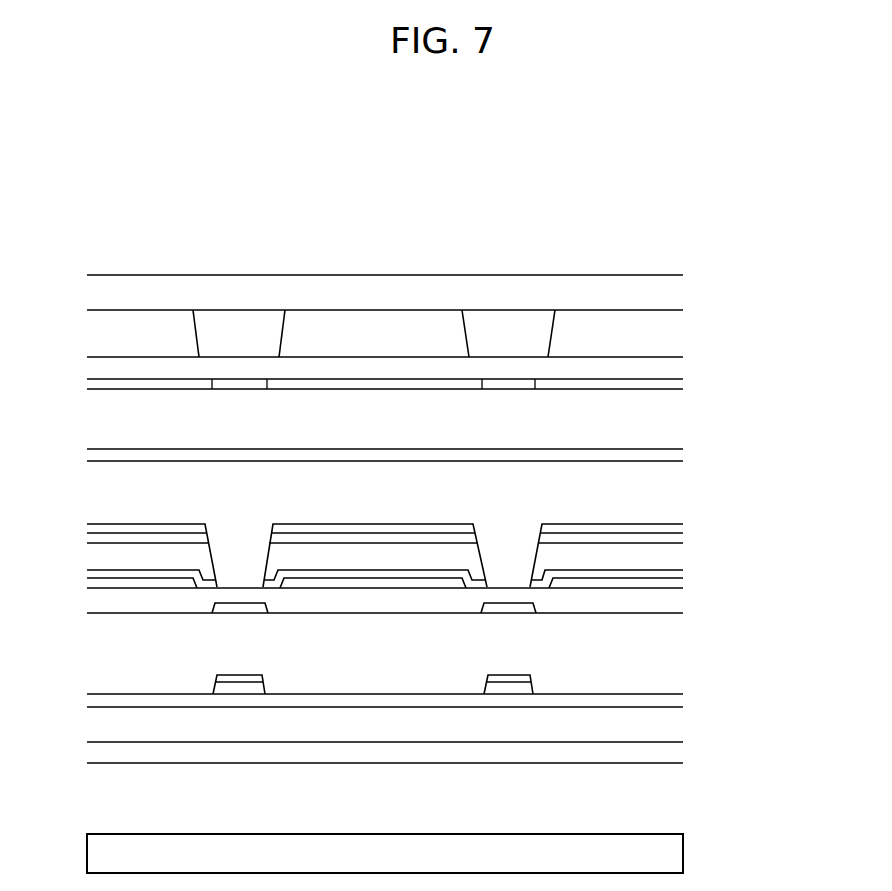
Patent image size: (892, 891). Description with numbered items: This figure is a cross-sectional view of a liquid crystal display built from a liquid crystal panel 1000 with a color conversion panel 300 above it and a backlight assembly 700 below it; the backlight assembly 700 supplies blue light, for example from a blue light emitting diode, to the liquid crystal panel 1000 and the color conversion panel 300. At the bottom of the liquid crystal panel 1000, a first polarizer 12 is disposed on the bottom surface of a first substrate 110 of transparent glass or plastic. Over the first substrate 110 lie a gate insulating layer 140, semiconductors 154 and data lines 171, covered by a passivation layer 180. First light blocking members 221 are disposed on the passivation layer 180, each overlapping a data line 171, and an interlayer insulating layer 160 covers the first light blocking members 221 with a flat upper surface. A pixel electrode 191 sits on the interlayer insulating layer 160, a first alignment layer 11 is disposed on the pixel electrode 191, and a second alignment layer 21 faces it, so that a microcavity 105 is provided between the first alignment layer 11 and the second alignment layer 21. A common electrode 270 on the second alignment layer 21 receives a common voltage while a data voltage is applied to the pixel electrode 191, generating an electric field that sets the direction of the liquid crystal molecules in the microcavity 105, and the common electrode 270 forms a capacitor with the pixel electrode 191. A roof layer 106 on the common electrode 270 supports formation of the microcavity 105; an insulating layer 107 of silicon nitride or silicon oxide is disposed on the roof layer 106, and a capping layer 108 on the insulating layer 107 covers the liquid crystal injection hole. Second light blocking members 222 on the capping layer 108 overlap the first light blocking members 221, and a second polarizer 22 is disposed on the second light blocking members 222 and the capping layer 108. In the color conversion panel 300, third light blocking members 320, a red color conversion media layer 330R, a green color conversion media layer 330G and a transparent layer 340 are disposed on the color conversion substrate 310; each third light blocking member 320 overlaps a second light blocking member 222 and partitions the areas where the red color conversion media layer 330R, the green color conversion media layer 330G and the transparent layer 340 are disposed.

The color conversion panel 300 is at (746, 286).
The color conversion substrate 310 is at (668, 294).
The third light blocking member 320 is at (519, 335).
The red color conversion media layer 330R is at (162, 347).
The green color conversion media layer 330G is at (397, 347).
The transparent layer 340 is at (638, 347).
The second polarizer 22 is at (673, 369).
The second light blocking member 222 is at (497, 385).
The capping layer 108 is at (675, 422).
The insulating layer 107 is at (675, 456).
The roof layer 106 is at (675, 492).
The liquid crystal panel 1000 is at (746, 357).
The common electrode 270 is at (362, 528).
The second alignment layer 21 is at (421, 538).
The microcavity 105 is at (484, 559).
The first alignment layer 11 is at (390, 575).
The pixel electrode 191 is at (433, 583).
The interlayer insulating layer 160 is at (137, 599).
The first light blocking member 221 is at (260, 607).
The passivation layer 180 is at (668, 652).
The semiconductor 154 is at (227, 688).
The data line 171 is at (250, 682).
The gate insulating layer 140 is at (675, 702).
The first substrate 110 is at (670, 723).
The first polarizer 12 is at (675, 753).
The backlight assembly 700 is at (672, 853).